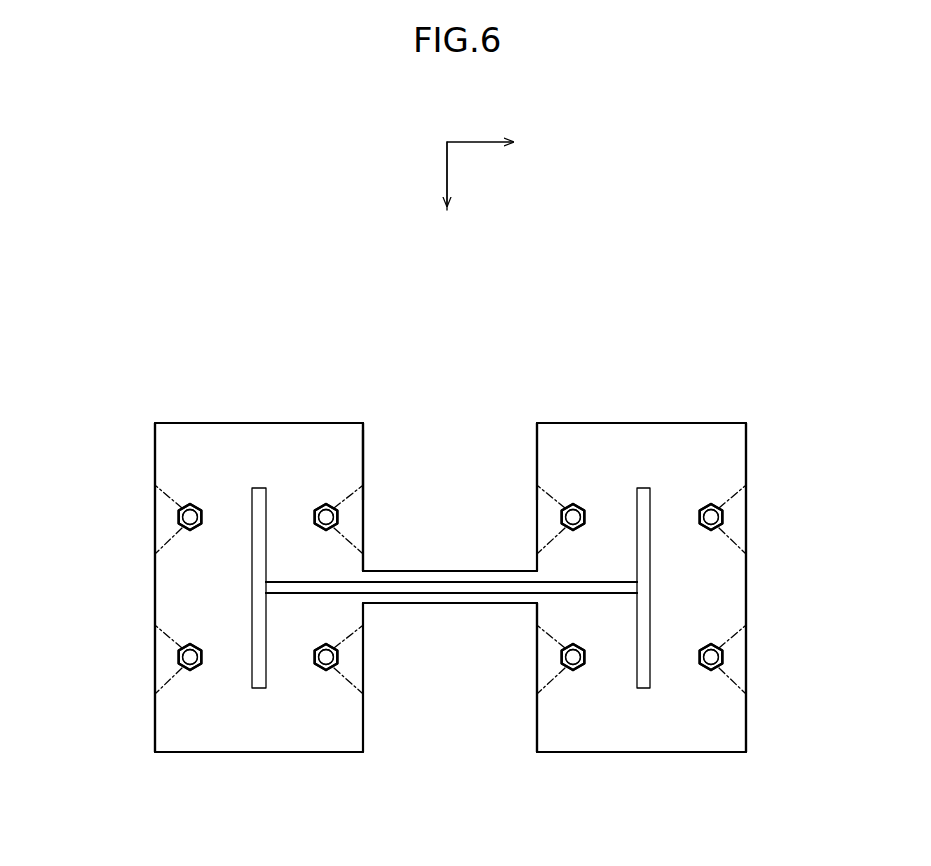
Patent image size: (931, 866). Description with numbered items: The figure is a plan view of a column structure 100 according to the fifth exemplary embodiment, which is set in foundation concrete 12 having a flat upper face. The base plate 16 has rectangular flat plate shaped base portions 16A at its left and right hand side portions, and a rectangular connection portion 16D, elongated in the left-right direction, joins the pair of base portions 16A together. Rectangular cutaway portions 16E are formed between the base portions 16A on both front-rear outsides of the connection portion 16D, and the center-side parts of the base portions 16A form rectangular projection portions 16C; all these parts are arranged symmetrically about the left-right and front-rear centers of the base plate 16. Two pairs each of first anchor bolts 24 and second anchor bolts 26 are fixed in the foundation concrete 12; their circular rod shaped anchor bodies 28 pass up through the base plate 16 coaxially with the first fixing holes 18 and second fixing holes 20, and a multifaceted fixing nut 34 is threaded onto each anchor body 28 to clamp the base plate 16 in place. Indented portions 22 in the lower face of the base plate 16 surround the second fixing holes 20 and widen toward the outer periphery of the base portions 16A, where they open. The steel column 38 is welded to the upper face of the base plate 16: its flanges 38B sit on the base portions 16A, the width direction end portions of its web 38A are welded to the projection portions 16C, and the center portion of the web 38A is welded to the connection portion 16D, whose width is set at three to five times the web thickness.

The column structure 100 is at (148, 233).
The foundation concrete 12 is at (728, 212).
The base plate 16 is at (155, 752).
The base portions 16A is at (175, 423).
The projection portions 16C is at (363, 423).
The connection portion 16D is at (467, 572).
The cutaway portions 16E is at (372, 440).
The first fixing holes 18 is at (454, 578).
The second fixing holes 20 is at (447, 588).
The indented portions 22 is at (454, 593).
The first anchor bolts 24 is at (185, 505).
The second anchor bolts 26 is at (331, 505).
The anchor bodies 28 is at (203, 517).
The fixing nut 34 is at (200, 528).
The steel column 38 is at (450, 592).
The web 38A is at (452, 605).
The flanges 38B is at (266, 610).